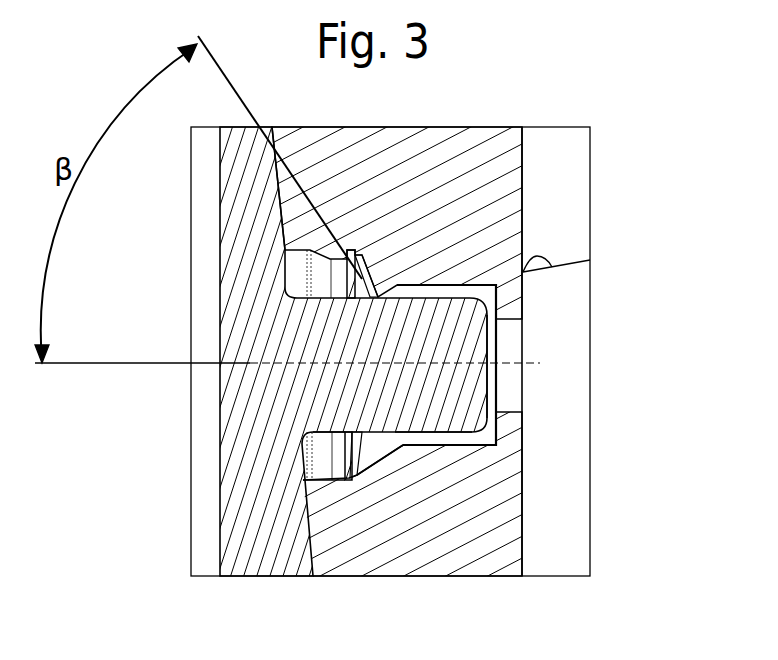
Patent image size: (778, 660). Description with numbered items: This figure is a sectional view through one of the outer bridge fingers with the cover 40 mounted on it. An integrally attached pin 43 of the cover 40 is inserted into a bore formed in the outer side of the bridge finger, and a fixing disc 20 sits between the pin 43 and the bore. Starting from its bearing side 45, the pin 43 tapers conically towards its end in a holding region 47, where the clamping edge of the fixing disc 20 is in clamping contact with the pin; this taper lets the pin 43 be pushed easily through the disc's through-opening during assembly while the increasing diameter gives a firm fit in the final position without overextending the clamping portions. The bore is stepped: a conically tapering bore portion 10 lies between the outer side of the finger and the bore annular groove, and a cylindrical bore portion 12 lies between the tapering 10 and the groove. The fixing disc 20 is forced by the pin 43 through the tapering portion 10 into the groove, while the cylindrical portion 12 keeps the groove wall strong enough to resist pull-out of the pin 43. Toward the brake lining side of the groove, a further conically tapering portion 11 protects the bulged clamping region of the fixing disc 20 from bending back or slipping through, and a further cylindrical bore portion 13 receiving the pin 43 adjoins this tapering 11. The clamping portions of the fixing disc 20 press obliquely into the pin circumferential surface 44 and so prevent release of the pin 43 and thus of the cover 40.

The bore portion 10 is at (317, 475).
The portion 11 is at (382, 452).
The cylindrical bore portion 12 is at (338, 473).
The further cylindrical bore portion 13 is at (439, 445).
The fixing disc 20 is at (362, 279).
The cover 40 is at (253, 410).
The pin 43 is at (444, 342).
The pin circumferential surface 44 is at (444, 427).
The collar side face 45 is at (465, 364).
The holding region 47 is at (390, 278).